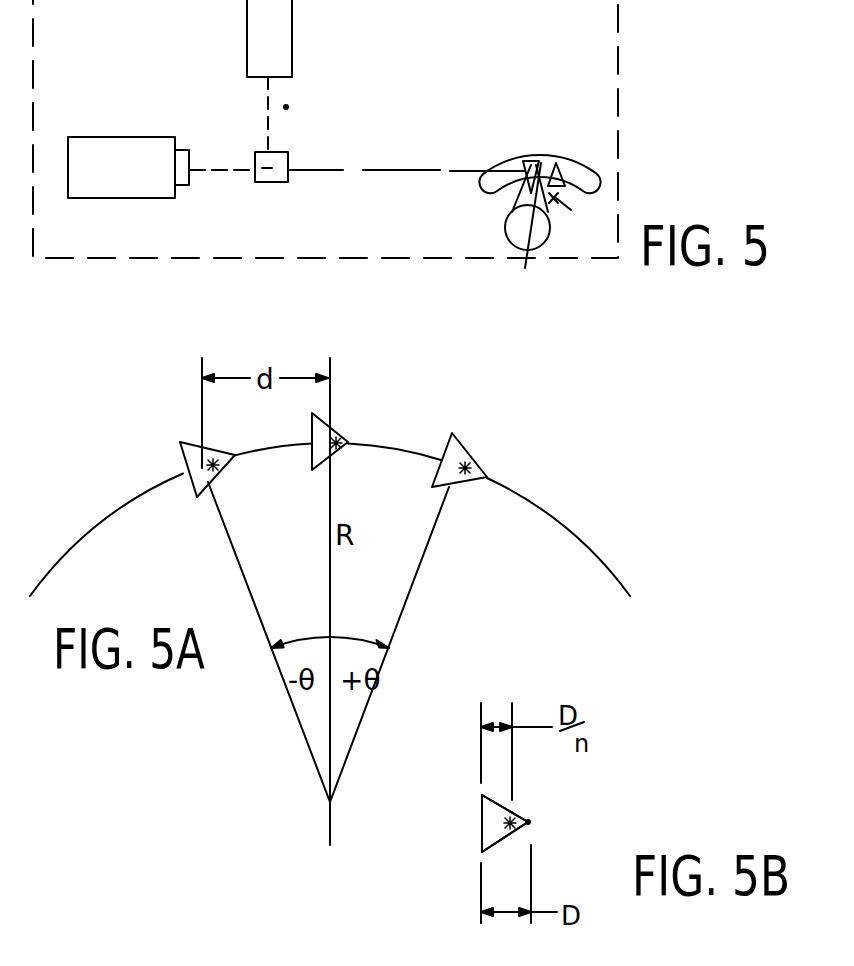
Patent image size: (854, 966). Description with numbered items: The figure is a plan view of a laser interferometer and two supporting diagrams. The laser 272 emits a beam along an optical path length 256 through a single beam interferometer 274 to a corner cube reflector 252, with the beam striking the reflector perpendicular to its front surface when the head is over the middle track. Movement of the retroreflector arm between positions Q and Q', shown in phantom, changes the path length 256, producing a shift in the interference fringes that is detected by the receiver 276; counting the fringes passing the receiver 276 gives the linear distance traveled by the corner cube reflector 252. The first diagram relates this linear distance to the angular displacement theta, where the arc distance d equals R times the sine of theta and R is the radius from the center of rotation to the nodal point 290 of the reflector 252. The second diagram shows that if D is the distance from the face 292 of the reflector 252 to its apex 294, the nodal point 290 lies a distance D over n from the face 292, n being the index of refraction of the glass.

In FIG. 5, the corner cube reflector 252 is at (590, 165).
In FIG. 5A, the corner cube reflector 252 is at (472, 453).
In FIG. 5B, the corner cube reflector 252 is at (500, 842).
In FIG. 5, the optical path length 256 is at (427, 171).
In FIG. 5, the laser 272 is at (138, 199).
In FIG. 5, the single beam interferometer 274 is at (275, 183).
In FIG. 5, the receiver 276 is at (292, 33).
In FIG. 5A, the nodal point 290 is at (216, 460).
In FIG. 5B, the nodal point 290 is at (503, 840).
In FIG. 5B, the face 292 is at (481, 820).
In FIG. 5B, the apex 294 is at (530, 826).